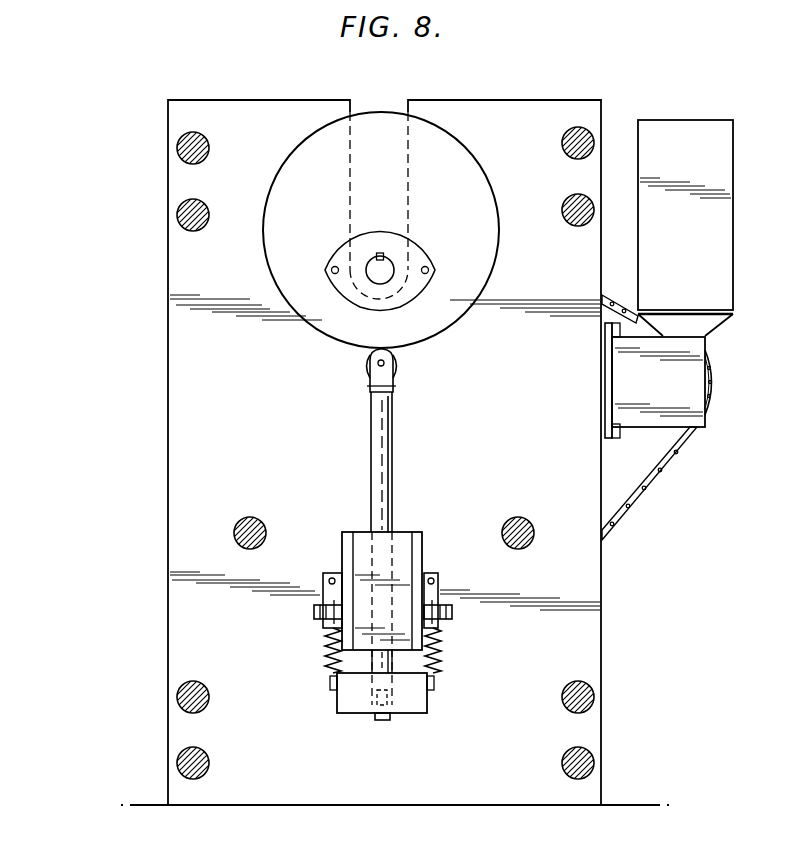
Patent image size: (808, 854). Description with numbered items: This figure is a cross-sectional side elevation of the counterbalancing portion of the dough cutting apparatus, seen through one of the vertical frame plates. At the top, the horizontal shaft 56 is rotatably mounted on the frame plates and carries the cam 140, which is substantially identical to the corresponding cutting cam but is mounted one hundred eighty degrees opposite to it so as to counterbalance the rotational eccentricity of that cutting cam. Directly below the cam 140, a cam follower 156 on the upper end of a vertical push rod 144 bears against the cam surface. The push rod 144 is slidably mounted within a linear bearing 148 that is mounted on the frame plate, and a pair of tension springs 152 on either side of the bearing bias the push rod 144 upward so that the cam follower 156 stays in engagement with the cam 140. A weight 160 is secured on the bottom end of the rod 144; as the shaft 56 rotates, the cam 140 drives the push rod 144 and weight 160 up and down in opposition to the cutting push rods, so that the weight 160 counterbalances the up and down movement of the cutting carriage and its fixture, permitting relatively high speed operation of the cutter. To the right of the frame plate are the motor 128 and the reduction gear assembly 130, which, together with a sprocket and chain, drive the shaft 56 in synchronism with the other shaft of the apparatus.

The horizontal shaft 56 is at (385, 266).
The cam 140 is at (437, 312).
The cam follower 156 is at (398, 362).
The vertical push rod 144 is at (392, 447).
The linear bearing 148 is at (405, 553).
The tension spring 152 is at (438, 655).
The weight 160 is at (410, 700).
The motor 128 is at (701, 244).
The reduction gear assembly 130 is at (677, 396).